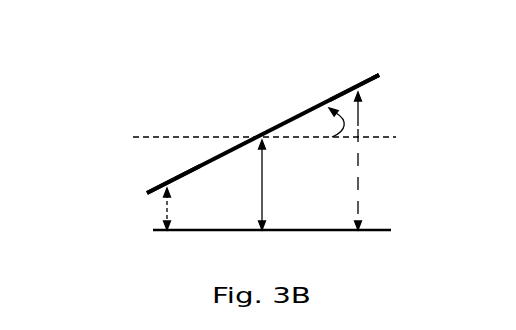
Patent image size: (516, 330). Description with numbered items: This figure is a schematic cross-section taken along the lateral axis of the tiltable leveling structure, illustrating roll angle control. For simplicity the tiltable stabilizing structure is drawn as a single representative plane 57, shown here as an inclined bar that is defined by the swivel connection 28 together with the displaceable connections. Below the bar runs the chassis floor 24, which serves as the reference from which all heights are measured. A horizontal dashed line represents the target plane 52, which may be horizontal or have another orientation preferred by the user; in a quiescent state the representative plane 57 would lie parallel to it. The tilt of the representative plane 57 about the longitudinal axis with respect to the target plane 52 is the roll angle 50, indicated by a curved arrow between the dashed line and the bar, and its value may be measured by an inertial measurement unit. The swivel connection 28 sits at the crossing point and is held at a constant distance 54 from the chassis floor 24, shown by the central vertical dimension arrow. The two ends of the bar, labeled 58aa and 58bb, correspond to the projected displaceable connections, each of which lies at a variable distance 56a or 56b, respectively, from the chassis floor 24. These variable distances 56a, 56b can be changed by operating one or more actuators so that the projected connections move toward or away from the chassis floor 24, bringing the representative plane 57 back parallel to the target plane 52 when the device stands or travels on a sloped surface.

The target plane 52 is at (163, 137).
The swivel connection 28 is at (256, 133).
The upper portion of inclined member 58bb is at (356, 84).
The lower portion of inclined member 58aa is at (163, 183).
The representative plane 57 is at (377, 70).
The roll angle 50 is at (343, 121).
The constant distance 54 is at (260, 172).
The variable distance 56a is at (163, 200).
The variable distance 56b is at (358, 163).
The chassis floor 24 is at (381, 228).